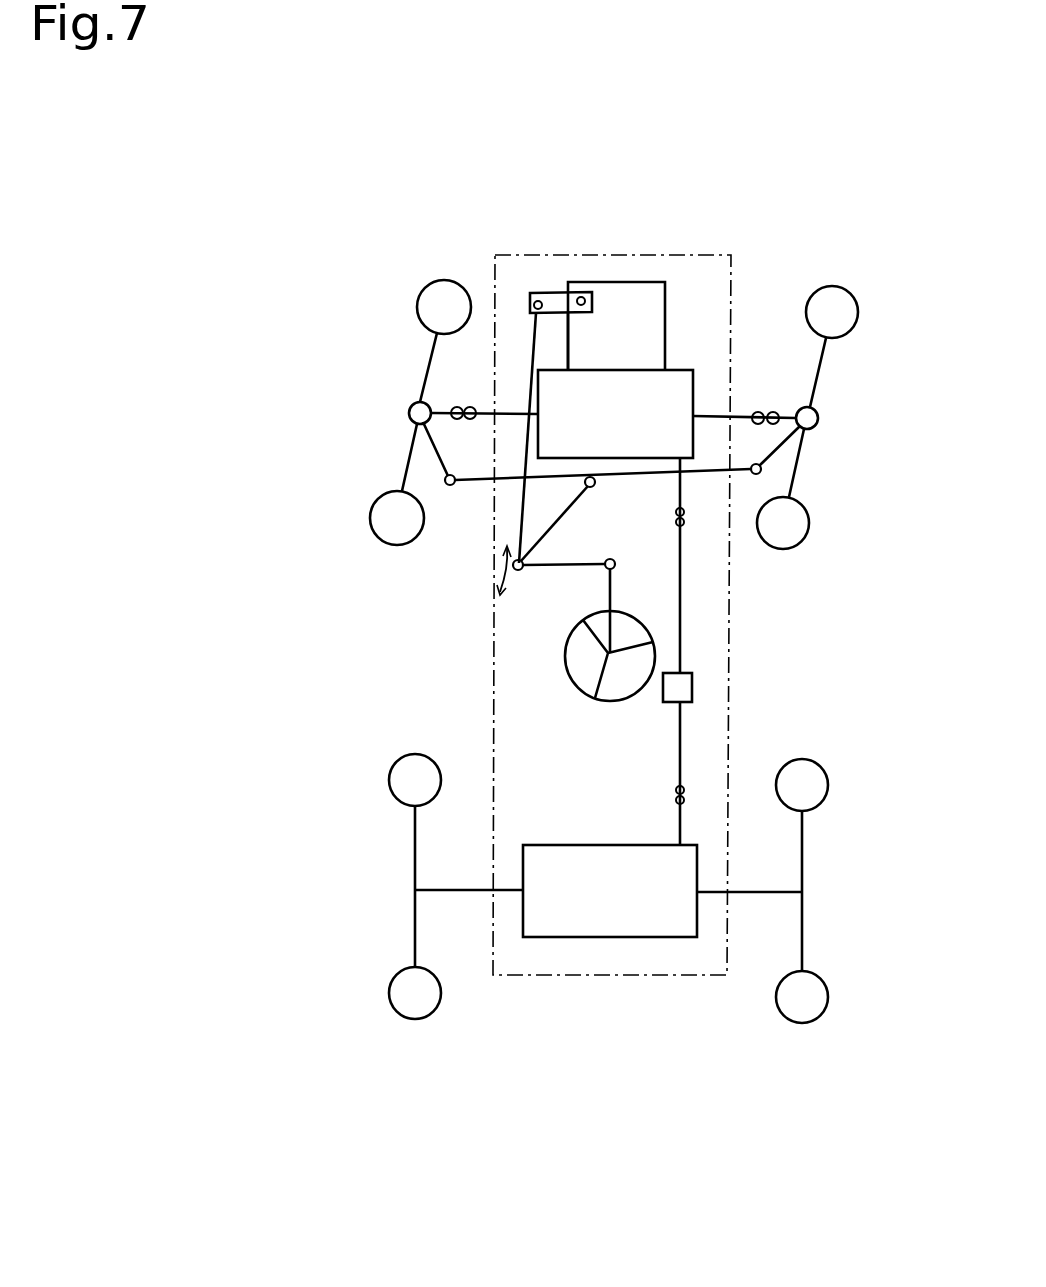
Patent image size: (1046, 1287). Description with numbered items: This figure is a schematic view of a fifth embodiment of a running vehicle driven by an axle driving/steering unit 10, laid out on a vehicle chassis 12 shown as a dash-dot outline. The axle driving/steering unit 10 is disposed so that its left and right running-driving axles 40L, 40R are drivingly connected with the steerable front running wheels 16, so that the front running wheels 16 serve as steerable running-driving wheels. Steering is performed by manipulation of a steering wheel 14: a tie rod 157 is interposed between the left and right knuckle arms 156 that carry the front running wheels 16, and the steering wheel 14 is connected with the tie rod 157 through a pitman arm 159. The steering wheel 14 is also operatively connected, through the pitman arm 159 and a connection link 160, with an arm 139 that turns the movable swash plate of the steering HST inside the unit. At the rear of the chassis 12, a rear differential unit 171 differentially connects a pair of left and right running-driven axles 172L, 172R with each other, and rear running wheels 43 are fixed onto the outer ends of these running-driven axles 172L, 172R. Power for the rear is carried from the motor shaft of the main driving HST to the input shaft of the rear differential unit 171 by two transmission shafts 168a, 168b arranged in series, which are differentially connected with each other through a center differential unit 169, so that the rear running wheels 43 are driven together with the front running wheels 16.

The axle driving/steering unit 10 is at (642, 277).
The vehicle chassis 12 is at (577, 975).
The steering wheel 14 is at (582, 690).
The front running wheels 16 is at (435, 280).
The left running-driving axle 40L is at (486, 412).
The right running-driving axle 40R is at (742, 413).
The rear running wheels 43 is at (413, 1019).
The arm 139 is at (540, 293).
The knuckle arms 156 is at (433, 447).
The tie rod 157 is at (468, 482).
The pitman arm 159 is at (568, 512).
The connection link 160 is at (532, 347).
The transmission shaft 168a is at (680, 612).
The transmission shaft 168b is at (680, 743).
The center differential unit 169 is at (692, 685).
The rear differential unit 171 is at (578, 847).
The left running-driven axle 172L is at (445, 888).
The right running-driven axle 172R is at (768, 892).